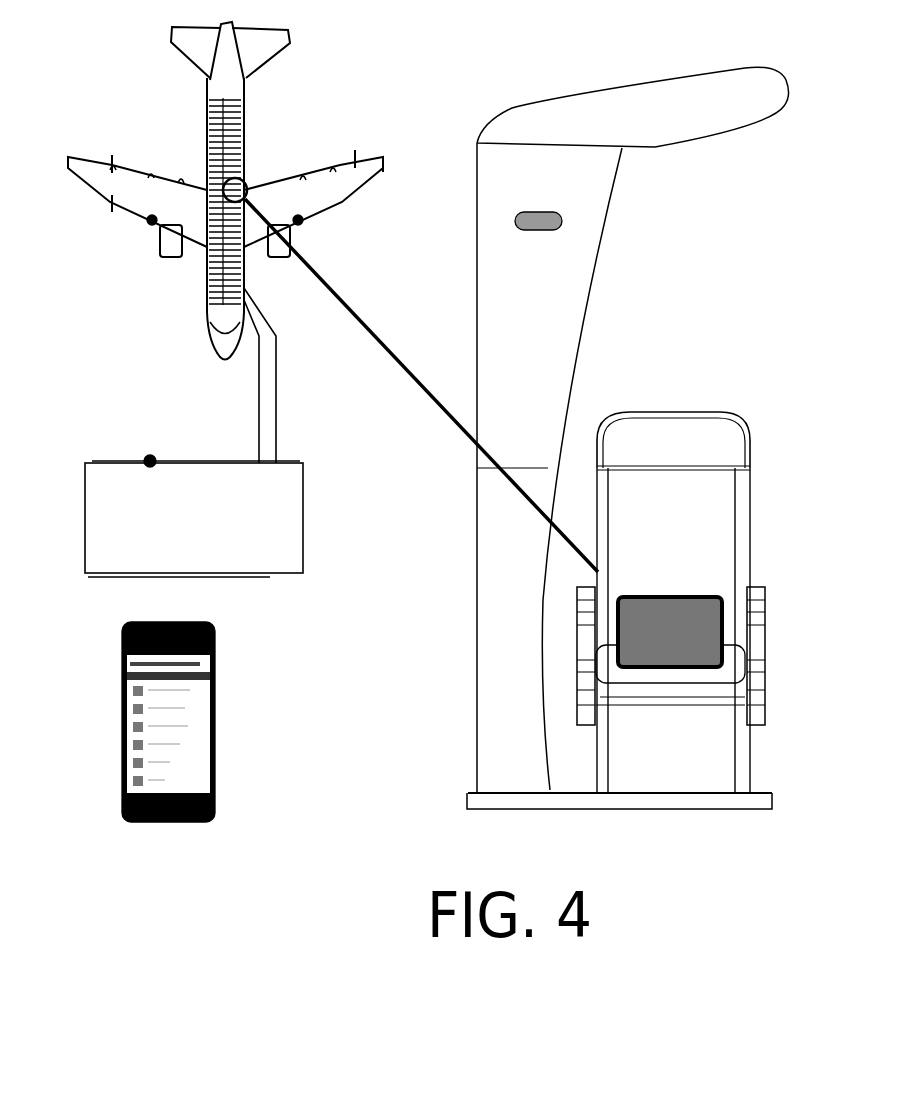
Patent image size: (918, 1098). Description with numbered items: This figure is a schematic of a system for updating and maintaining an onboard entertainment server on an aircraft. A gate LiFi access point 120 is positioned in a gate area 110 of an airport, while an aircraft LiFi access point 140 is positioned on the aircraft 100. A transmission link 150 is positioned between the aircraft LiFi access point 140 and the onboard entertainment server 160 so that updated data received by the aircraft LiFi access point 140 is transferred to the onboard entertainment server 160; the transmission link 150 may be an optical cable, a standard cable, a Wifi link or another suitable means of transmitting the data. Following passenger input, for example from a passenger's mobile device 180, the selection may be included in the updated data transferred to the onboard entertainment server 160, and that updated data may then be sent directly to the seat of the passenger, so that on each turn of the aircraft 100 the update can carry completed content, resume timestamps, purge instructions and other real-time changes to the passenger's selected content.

The aircraft 100 is at (310, 297).
The gate area 110 is at (194, 519).
The gate LiFi access point 120 is at (152, 457).
The aircraft LiFi access point 140 is at (150, 222).
The transmission link 150 is at (200, 243).
The onboard entertainment server 160 is at (207, 332).
The mobile device 180 is at (215, 755).